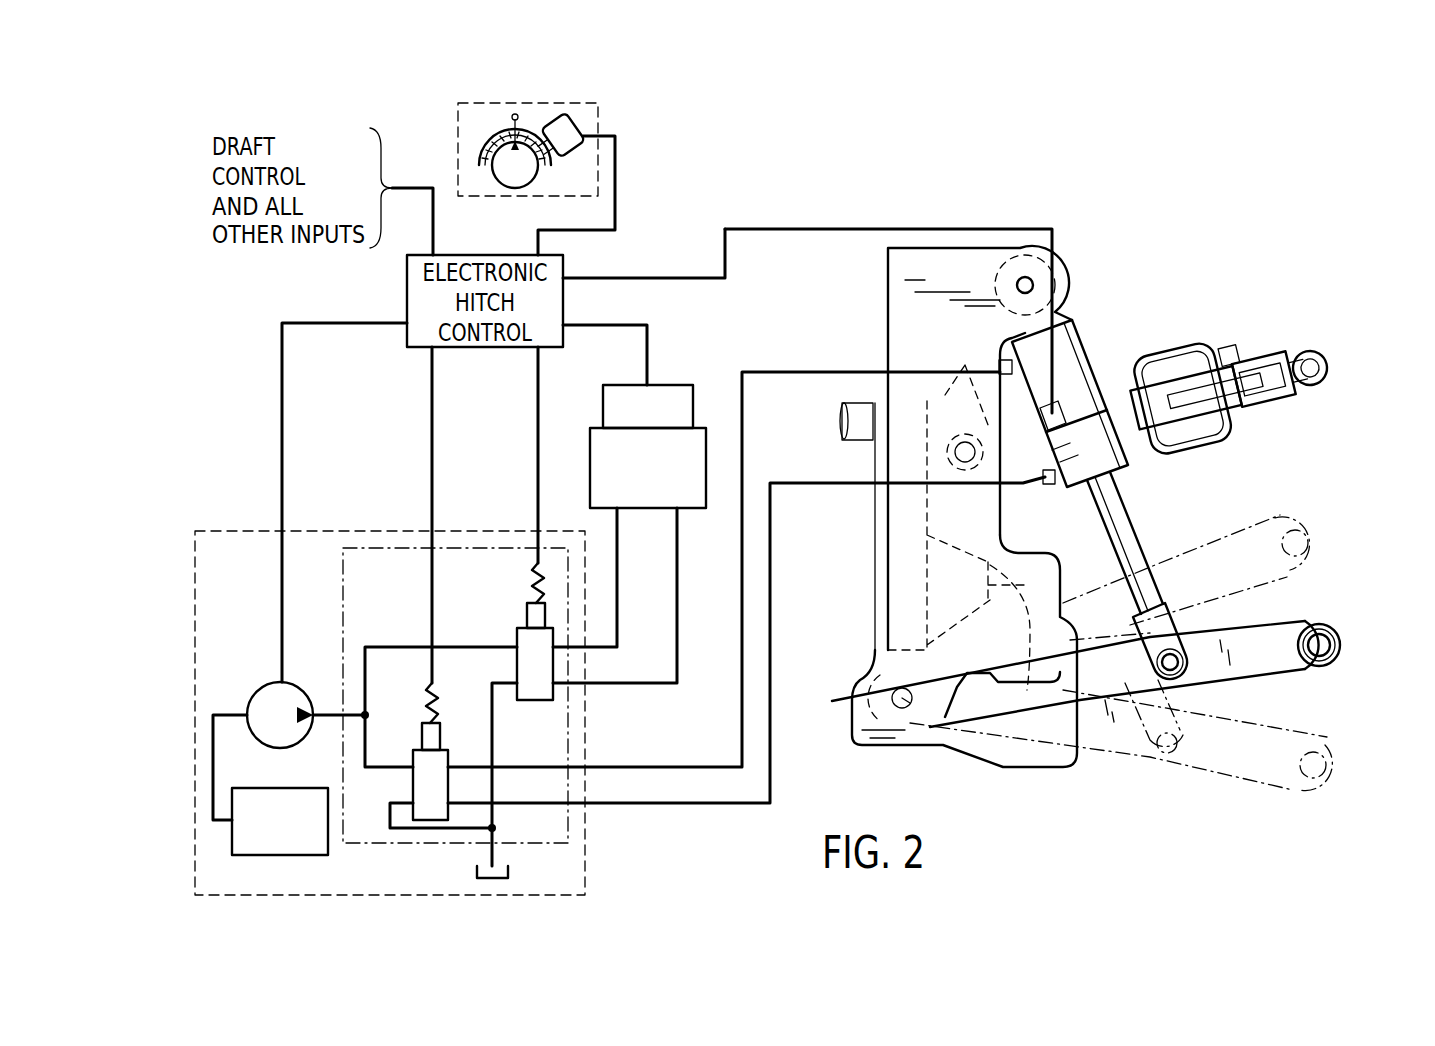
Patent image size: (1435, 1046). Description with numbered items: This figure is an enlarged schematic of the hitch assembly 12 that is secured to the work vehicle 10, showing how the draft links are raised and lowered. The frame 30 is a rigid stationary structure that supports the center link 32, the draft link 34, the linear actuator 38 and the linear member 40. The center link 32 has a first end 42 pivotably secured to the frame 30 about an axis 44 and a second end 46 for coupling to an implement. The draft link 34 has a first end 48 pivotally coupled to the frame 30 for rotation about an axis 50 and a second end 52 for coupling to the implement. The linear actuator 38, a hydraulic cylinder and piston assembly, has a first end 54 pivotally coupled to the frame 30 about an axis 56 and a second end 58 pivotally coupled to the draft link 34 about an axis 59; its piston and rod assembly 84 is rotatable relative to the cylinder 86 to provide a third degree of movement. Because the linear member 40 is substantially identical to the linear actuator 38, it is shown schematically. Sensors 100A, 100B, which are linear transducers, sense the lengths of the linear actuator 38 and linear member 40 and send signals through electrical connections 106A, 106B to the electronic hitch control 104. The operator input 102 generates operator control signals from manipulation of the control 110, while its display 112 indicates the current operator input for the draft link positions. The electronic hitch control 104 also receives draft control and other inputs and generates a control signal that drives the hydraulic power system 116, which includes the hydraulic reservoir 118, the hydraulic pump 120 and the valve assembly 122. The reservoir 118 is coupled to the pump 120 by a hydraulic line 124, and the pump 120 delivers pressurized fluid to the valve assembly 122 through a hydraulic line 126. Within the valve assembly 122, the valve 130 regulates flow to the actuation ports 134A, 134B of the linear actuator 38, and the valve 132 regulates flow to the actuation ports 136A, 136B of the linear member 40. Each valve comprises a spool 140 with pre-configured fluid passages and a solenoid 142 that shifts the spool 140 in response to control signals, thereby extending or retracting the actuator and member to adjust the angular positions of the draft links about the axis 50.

The work vehicle 10 is at (770, 155).
The hitch assembly 12 is at (1180, 208).
The frame 30 is at (945, 262).
The center link 32 is at (1250, 369).
The draft link 34 is at (1125, 675).
The linear actuator 38 is at (1059, 402).
The linear member 40 is at (590, 445).
The first end 42 is at (943, 395).
The axis 44 is at (952, 465).
The second end 46 is at (1327, 373).
The first end 48 is at (908, 727).
The axis 50 is at (892, 700).
The second end 52 is at (1343, 667).
The first end 54 is at (1013, 255).
The axis 56 is at (1032, 282).
The second end 58 is at (1198, 659).
The axis 59 is at (1172, 667).
The piston and rod assembly 84 is at (1117, 512).
The cylinder 86 is at (1128, 467).
The sensor 100A is at (1072, 417).
The sensor 100B is at (603, 408).
The operator input 102 is at (541, 129).
The electronic hitch control 104 is at (566, 266).
The electrical connection 106A is at (838, 229).
The electrical connection 106B is at (648, 356).
The control 110 is at (513, 114).
The display 112 is at (480, 149).
The hydraulic power system 116 is at (588, 835).
The hydraulic reservoir 118 is at (280, 857).
The hydraulic pump 120 is at (258, 693).
The valve assembly 122 is at (385, 548).
The hydraulic line 124 is at (213, 750).
The hydraulic line 126 is at (333, 712).
The valve 130 is at (455, 745).
The valve 132 is at (505, 668).
The actuation port 134A is at (1045, 485).
The actuation port 134B is at (1013, 372).
The actuation port 136A is at (681, 512).
The actuation port 136B is at (620, 512).
The spool 140 is at (413, 777).
The solenoid 142 is at (523, 612).